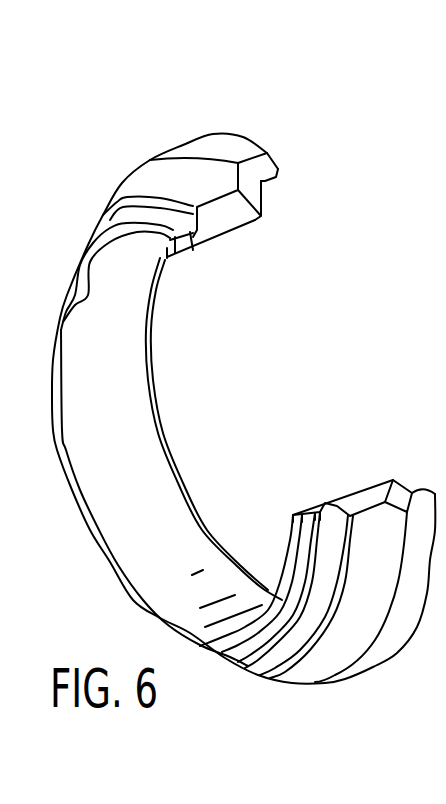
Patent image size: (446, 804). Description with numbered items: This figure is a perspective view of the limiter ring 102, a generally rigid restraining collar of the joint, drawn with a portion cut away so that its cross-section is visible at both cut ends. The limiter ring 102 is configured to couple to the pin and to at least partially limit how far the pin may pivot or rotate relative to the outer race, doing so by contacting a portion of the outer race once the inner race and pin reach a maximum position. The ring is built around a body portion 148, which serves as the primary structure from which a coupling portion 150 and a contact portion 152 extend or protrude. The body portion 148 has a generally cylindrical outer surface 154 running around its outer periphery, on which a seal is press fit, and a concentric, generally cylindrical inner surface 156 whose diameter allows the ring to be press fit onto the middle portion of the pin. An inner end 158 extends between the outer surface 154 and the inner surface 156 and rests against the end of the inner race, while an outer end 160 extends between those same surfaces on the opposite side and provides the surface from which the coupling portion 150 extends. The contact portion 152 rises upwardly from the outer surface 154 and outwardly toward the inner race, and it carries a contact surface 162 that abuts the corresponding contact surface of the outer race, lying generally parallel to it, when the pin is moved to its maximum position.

The limiter ring 102 is at (248, 85).
The body portion 148 is at (220, 217).
The coupling portion 150 is at (183, 243).
The contact portion 152 is at (261, 171).
The outer surface 154 is at (236, 192).
The inner surface 156 is at (235, 233).
The inner end 158 is at (265, 205).
The outer end 160 is at (197, 214).
The contact surface 162 is at (270, 158).